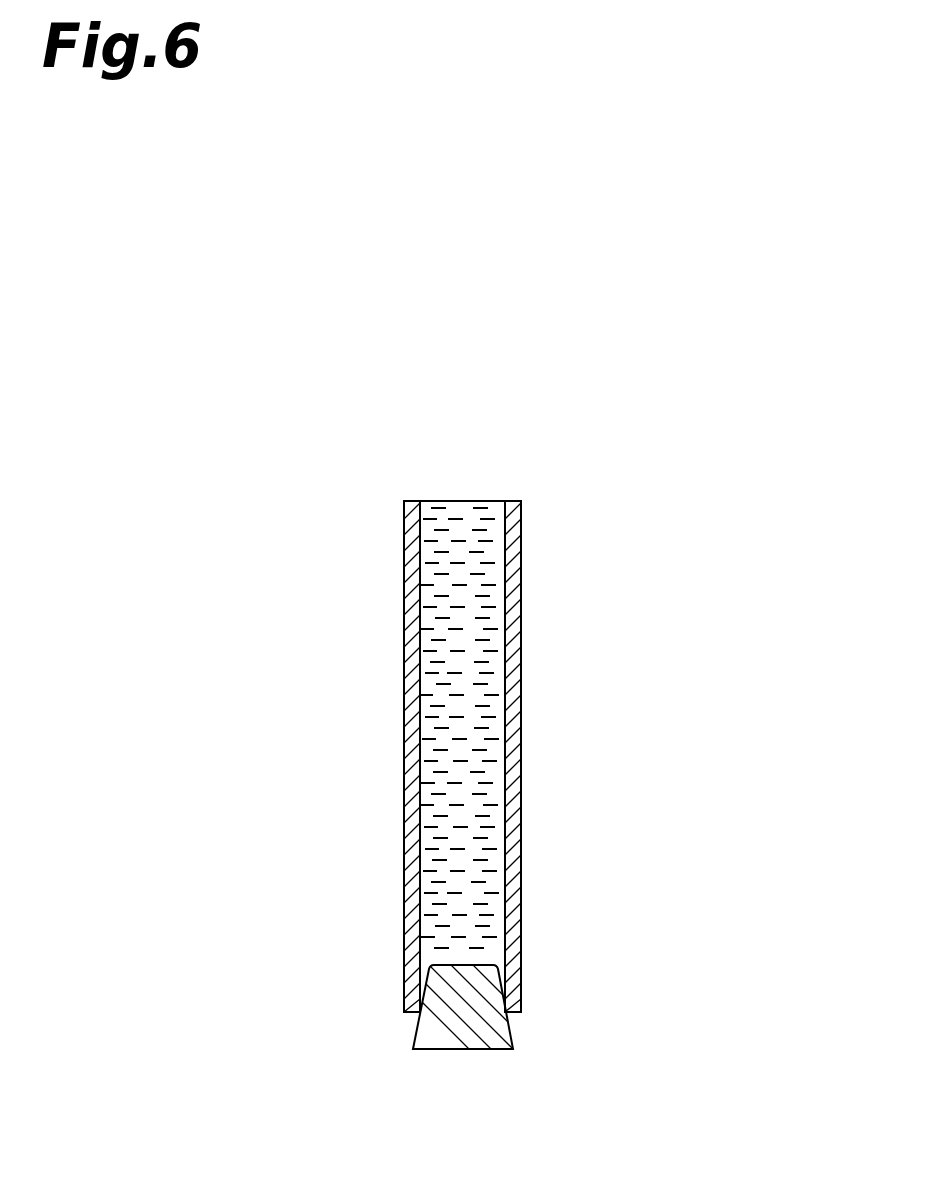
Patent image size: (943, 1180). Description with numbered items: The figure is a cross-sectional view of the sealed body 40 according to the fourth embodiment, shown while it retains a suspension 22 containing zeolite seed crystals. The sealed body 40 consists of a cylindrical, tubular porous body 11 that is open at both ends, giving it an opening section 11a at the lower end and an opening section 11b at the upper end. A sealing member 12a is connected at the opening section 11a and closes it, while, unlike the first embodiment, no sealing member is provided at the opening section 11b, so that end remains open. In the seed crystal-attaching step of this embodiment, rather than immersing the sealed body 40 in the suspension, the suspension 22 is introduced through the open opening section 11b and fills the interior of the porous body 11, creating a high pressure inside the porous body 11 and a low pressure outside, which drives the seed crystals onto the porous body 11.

The sealed body 40 is at (724, 303).
The porous body 11 is at (517, 703).
The opening section 11a is at (516, 1021).
The opening section 11b is at (517, 496).
The suspension 22 is at (443, 765).
The sealing member 12a is at (468, 1049).